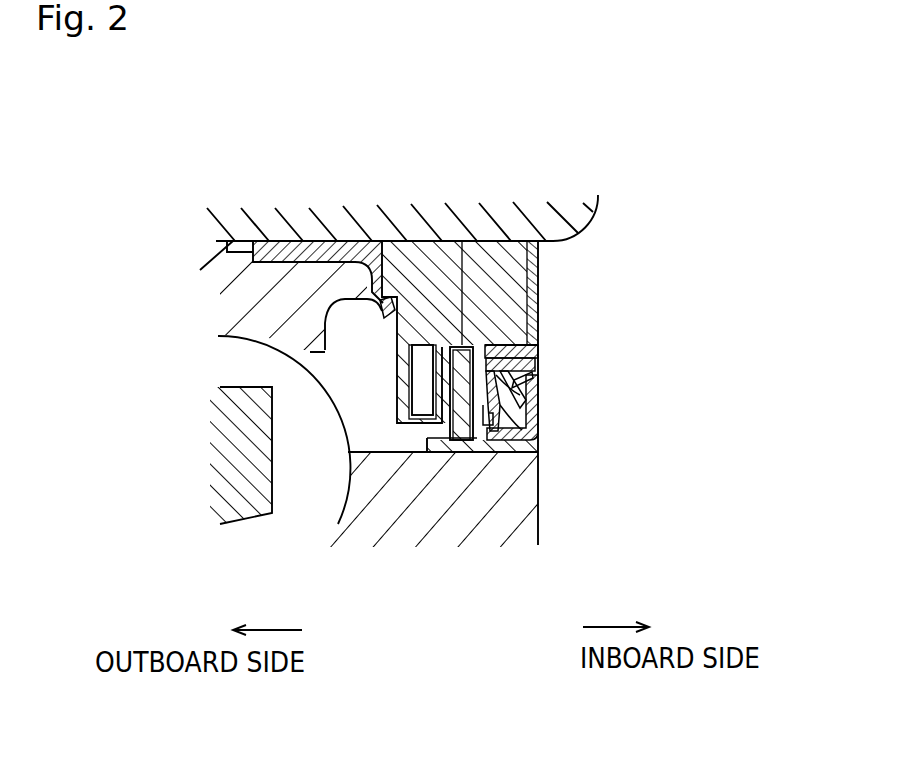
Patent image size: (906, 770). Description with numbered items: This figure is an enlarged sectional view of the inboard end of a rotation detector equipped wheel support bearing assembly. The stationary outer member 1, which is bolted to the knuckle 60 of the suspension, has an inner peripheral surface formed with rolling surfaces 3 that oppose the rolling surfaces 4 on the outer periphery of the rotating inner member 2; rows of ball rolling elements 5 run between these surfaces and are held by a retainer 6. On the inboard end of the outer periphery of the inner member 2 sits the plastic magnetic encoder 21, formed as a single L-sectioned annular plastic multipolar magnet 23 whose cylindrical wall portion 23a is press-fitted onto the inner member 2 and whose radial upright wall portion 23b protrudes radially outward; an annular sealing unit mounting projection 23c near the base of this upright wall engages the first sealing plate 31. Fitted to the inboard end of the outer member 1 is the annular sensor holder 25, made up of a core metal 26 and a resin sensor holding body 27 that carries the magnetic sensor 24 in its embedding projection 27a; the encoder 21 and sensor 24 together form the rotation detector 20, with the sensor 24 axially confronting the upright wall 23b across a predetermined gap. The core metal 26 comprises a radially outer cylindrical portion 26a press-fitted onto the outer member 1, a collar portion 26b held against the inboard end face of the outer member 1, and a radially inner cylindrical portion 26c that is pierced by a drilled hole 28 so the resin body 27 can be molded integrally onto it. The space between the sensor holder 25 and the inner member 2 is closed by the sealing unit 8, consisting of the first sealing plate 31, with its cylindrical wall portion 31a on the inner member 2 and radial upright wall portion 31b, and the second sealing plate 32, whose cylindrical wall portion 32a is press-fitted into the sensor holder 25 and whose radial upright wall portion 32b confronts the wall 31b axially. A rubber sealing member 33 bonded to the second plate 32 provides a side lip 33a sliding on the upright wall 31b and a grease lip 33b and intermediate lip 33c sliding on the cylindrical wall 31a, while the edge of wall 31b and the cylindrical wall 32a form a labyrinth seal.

The outer member 1 is at (230, 282).
The inner member 2 is at (540, 518).
The rolling surfaces 3 is at (258, 334).
The rolling surfaces 4 is at (322, 518).
The rolling elements 5 is at (322, 483).
The retainer 6 is at (235, 483).
The sealing unit 8 is at (594, 385).
The rotation detector 20 is at (455, 134).
The plastic magnetic encoder 21 is at (455, 347).
The annular plastic multipolar magnet 23 is at (433, 399).
The cylindrical wall portion 23a is at (445, 455).
The radial upright wall portion 23b is at (420, 367).
The annular sealing unit mounting projection 23c is at (462, 440).
The magnetic sensor 24 is at (418, 350).
The annular sensor holder 25 is at (567, 107).
The core metal 26 is at (528, 335).
The radially outer cylindrical portion 26a is at (300, 243).
The collar portion 26b is at (365, 275).
The radially inner cylindrical portion 26c is at (510, 345).
The sensor holding body 27 is at (488, 300).
The embedding projection 27a is at (383, 420).
The drilled hole 28 is at (473, 237).
The first sealing plate 31 is at (560, 449).
The cylindrical wall portion 31a is at (517, 445).
The radial upright wall portion 31b is at (537, 403).
The second sealing plate 32 is at (488, 405).
The cylindrical wall portion 32a is at (515, 340).
The radial upright wall portion 32b is at (470, 400).
The sealing member 33 is at (533, 413).
The side lip 33a is at (537, 395).
The grease lip 33b is at (497, 392).
The intermediate lip 33c is at (552, 447).
The knuckle 60 is at (560, 240).